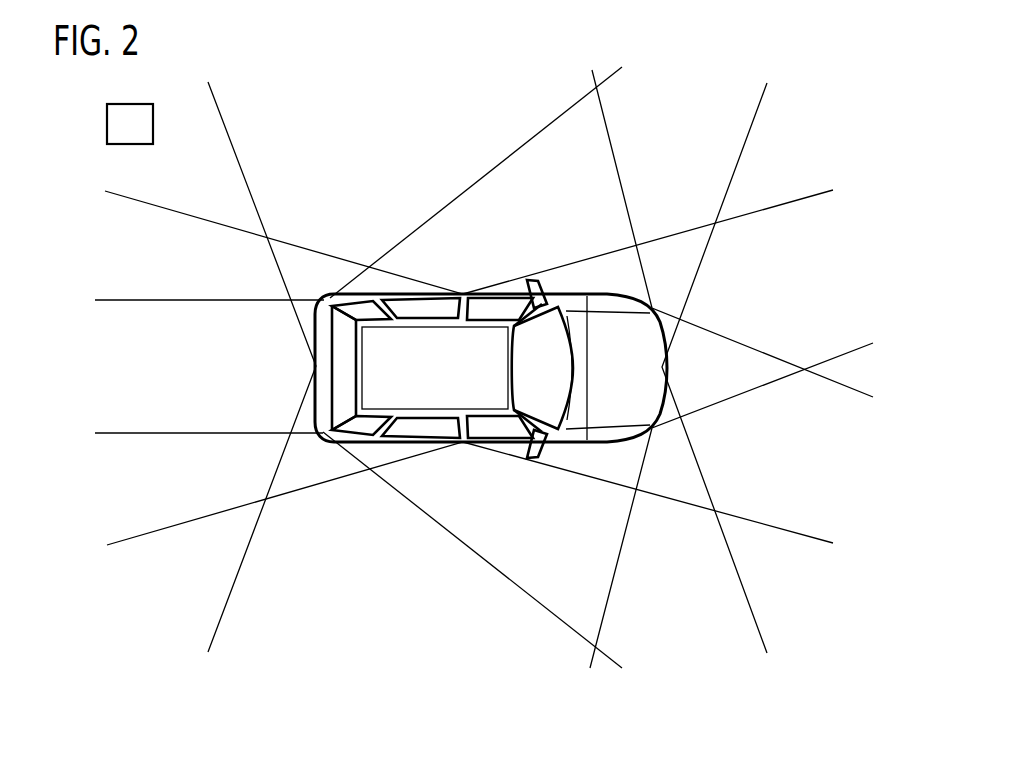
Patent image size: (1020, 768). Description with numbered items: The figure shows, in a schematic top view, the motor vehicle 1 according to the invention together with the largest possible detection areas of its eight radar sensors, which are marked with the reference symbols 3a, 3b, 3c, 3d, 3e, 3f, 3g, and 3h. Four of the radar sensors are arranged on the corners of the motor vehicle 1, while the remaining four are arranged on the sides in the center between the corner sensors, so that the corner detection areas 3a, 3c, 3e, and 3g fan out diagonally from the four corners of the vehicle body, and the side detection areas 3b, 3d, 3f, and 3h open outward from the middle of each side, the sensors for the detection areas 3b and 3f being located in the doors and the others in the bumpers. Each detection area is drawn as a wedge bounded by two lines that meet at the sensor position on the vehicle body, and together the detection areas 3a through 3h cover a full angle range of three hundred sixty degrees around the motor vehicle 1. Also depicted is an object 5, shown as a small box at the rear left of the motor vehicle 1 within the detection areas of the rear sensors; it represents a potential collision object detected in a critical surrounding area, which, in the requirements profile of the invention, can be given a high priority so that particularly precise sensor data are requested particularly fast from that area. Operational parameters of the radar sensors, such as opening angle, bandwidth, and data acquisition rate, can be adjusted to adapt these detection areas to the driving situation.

The motor vehicle 1 is at (380, 443).
The object 5 is at (130, 145).
The detection area 3a is at (315, 286).
The detection area 3b is at (473, 276).
The detection area 3c is at (680, 284).
The detection area 3d is at (712, 381).
The detection area 3e is at (677, 481).
The detection area 3f is at (471, 501).
The detection area 3g is at (315, 473).
The detection area 3h is at (297, 374).